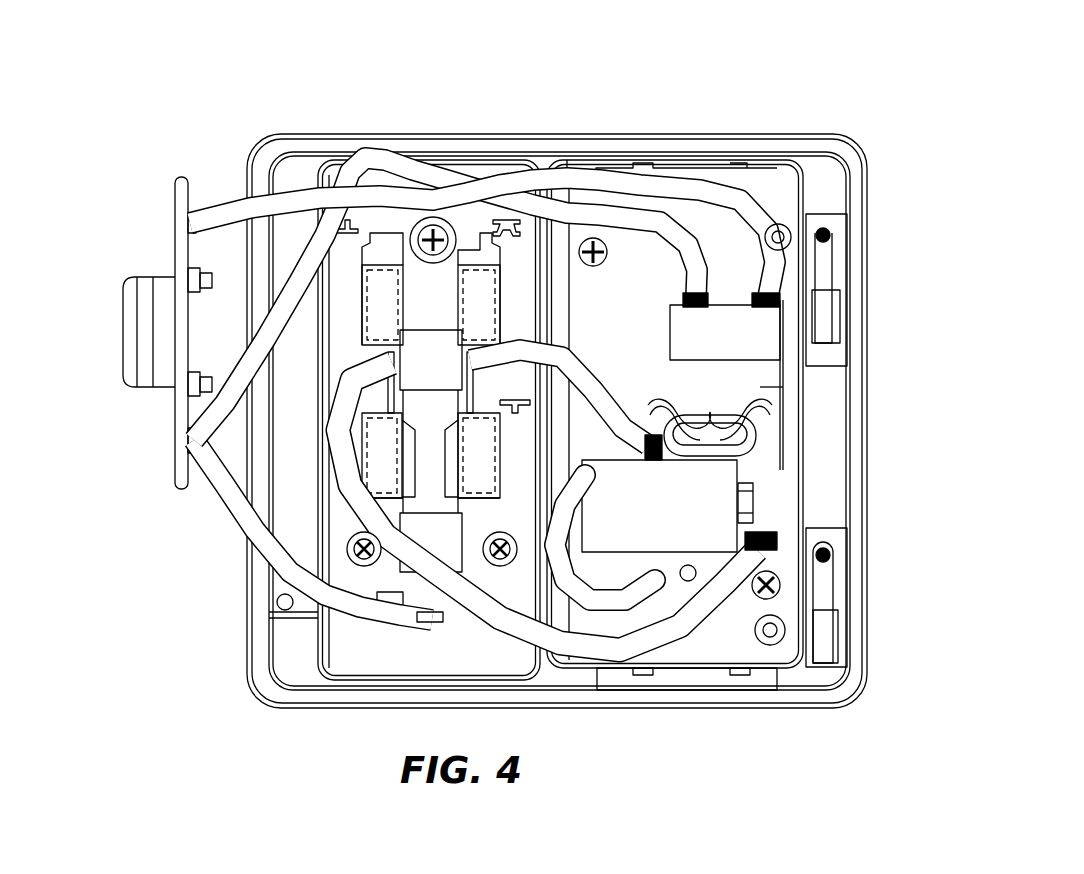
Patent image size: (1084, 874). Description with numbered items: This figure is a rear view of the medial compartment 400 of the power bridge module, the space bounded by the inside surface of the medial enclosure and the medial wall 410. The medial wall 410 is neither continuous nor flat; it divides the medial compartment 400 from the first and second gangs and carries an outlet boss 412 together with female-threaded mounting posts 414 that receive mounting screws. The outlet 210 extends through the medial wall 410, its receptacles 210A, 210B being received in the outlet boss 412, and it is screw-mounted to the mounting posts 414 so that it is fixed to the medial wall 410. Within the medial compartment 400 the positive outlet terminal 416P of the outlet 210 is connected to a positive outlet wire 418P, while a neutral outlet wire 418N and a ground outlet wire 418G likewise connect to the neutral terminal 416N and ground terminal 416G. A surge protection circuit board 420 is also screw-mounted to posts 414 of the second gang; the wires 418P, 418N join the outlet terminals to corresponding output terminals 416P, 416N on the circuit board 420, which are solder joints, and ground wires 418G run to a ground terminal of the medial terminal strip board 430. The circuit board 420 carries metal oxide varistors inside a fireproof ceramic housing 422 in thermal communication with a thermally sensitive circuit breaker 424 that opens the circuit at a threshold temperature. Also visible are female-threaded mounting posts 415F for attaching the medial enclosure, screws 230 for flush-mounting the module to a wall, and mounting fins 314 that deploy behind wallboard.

The medial compartment 400 is at (514, 421).
The medial wall 410 is at (559, 421).
The outlet boss 412 is at (480, 270).
The mounting posts 414 is at (420, 215).
The female-threaded mounting posts 415F is at (785, 632).
The neutral terminal 416N is at (683, 297).
The positive outlet terminal 416P is at (760, 308).
The ground outlet terminal 416G is at (422, 624).
The neutral outlet wire 418N is at (705, 170).
The positive outlet wire 418P is at (385, 165).
The ground outlet wire 418G is at (250, 497).
The circuit board 420 is at (767, 387).
The fireproof ceramic housing 422 is at (727, 470).
The thermally sensitive circuit breaker 424 is at (747, 503).
The medial terminal strip board 430 is at (173, 260).
The outlet 210 is at (360, 300).
The receptacle 210A is at (380, 280).
The receptacle 210B is at (247, 475).
The screws 230 is at (833, 235).
The mounting fins 314 is at (833, 258).